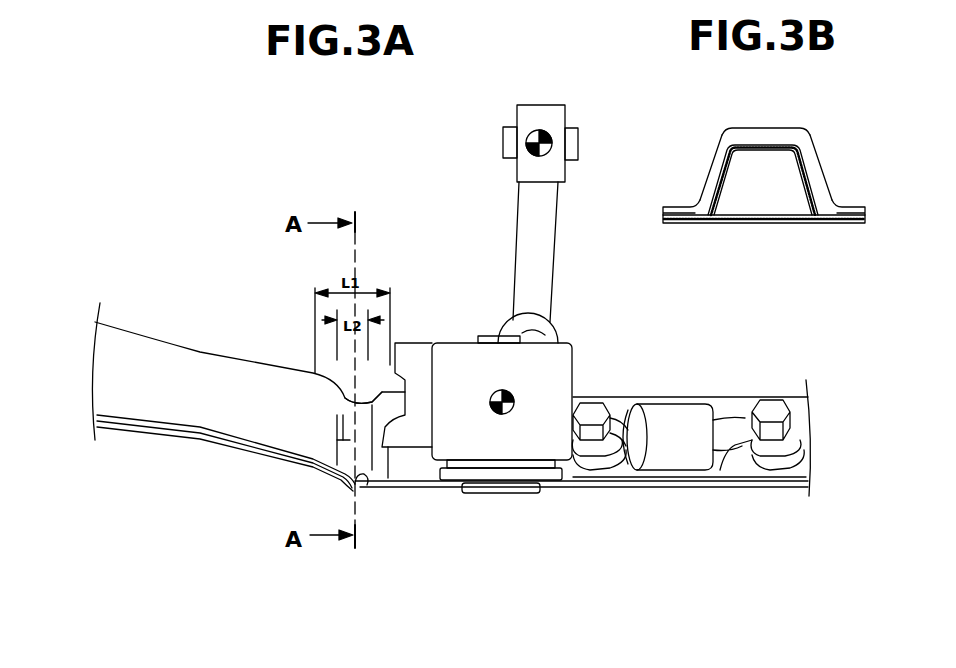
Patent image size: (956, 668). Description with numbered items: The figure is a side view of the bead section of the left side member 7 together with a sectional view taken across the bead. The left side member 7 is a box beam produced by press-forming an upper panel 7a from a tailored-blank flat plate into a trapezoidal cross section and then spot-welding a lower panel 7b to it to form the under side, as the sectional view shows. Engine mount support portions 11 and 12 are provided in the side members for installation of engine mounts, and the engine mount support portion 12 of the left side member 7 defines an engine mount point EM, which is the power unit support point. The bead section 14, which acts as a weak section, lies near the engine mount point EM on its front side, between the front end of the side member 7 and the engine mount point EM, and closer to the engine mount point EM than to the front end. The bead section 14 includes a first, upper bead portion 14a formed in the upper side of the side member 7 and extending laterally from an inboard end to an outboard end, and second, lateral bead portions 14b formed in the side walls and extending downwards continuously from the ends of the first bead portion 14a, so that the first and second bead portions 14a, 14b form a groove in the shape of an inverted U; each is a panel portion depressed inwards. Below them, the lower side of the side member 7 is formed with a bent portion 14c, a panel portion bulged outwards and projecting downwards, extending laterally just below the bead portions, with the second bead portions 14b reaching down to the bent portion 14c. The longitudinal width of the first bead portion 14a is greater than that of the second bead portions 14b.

In FIG. 3A, the left side member 7 is at (172, 336).
In FIG. 3B, the left side member 7 is at (764, 221).
In FIG. 3B, the upper panel 7a is at (715, 185).
In FIG. 3B, the lower panel 7b is at (682, 223).
In FIG. 3A, the right engine mount support portion 11 is at (556, 328).
In FIG. 3A, the left engine mount support portion 12 is at (542, 372).
In FIG. 3A, the bead section 14 is at (306, 356).
In FIG. 3B, the bead section 14 is at (759, 148).
In FIG. 3A, the first bead portion 14a is at (345, 398).
In FIG. 3B, the first bead portion 14a is at (737, 135).
In FIG. 3A, the second bead portion 14b is at (337, 440).
In FIG. 3B, the second bead portion 14b is at (705, 167).
In FIG. 3A, the bent portion 14c is at (365, 486).
In FIG. 3B, the bent portion 14c is at (675, 208).
In FIG. 3A, the engine mount point EM is at (528, 152).